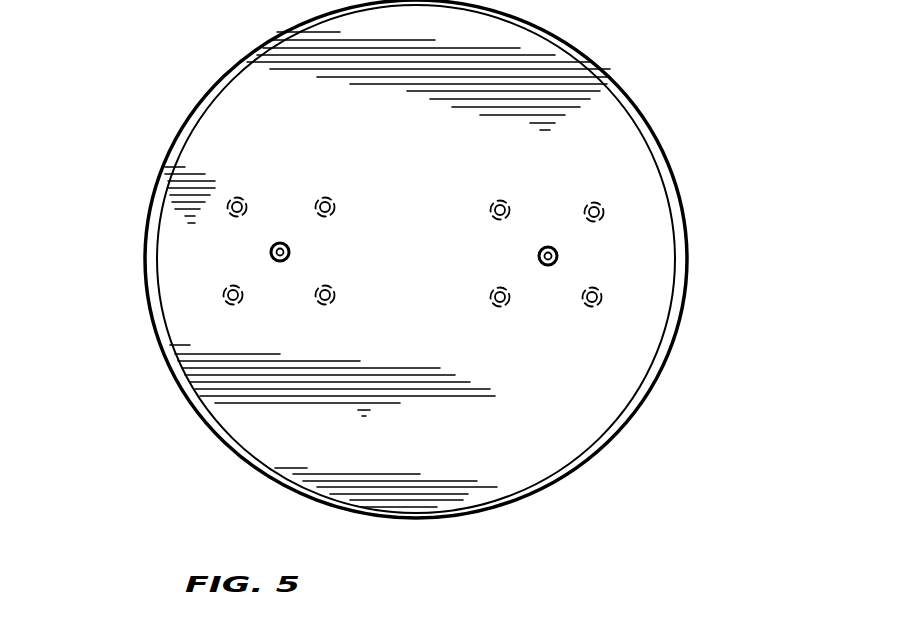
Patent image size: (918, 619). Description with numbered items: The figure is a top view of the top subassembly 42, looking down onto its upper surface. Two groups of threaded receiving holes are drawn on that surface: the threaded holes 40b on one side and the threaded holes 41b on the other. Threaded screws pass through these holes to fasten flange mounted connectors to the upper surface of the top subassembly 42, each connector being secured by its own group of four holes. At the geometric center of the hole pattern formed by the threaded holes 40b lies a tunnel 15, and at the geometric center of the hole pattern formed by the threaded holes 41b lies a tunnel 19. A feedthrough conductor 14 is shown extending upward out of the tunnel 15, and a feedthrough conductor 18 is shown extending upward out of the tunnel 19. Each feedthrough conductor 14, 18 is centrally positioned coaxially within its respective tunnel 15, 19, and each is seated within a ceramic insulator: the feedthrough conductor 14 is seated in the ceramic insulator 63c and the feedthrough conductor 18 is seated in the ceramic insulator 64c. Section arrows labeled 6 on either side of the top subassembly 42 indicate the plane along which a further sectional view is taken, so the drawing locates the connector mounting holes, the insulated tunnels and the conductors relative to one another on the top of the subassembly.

The top subassembly 42 is at (661, 378).
The threaded receiving holes 41b is at (323, 197).
The threaded receiving holes 40b is at (508, 203).
The ceramic insulator 64c is at (270, 247).
The ceramic insulator 63c is at (539, 262).
The tunnel 19 is at (291, 252).
The feedthrough conductor 18 is at (271, 256).
The tunnel 15 is at (539, 254).
The feedthrough conductor 14 is at (557, 261).
The section line for FIG. 6 is at (130, 246).